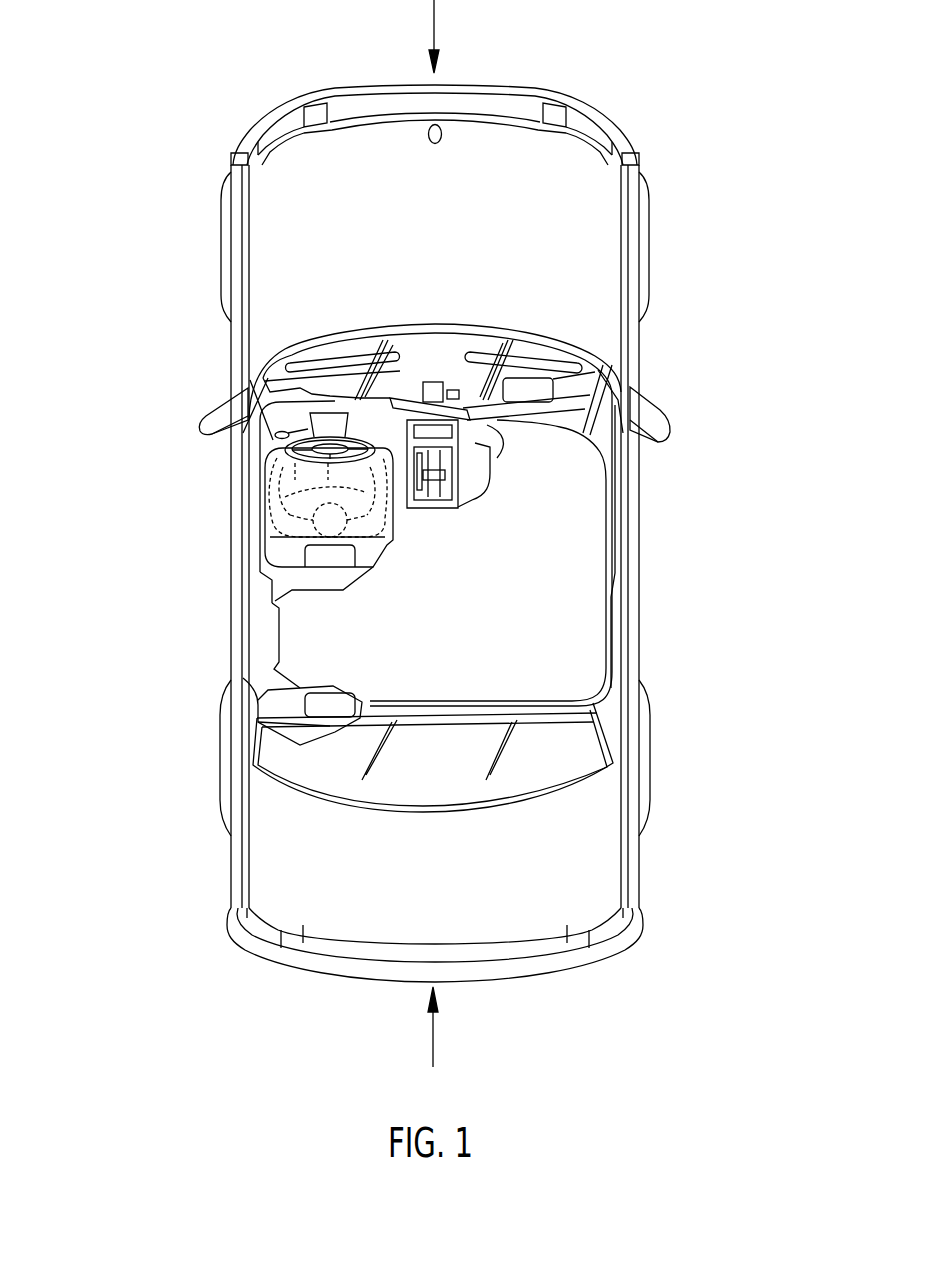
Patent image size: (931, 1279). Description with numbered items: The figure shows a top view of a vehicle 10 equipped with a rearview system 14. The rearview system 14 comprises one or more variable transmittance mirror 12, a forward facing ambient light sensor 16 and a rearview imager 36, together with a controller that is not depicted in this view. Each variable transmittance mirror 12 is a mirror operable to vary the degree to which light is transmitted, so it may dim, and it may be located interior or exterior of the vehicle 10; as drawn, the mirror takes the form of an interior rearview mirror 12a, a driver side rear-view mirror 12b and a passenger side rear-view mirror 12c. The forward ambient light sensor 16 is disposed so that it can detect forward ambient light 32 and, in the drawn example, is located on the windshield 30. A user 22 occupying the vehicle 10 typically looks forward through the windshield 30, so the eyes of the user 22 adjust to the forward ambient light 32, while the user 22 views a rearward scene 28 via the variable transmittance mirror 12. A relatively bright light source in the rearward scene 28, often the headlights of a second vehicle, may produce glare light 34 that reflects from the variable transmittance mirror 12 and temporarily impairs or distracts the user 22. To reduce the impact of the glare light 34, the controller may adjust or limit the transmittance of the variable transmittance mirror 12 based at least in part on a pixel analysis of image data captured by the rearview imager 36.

The vehicle 10 is at (667, 76).
The variable transmittance mirror 12 is at (435, 434).
The interior rearview mirror 12a is at (453, 397).
The driver side rear-view mirror 12b is at (210, 437).
The passenger side rear-view mirror 12c is at (653, 442).
The rearview system 14 is at (219, 323).
The forward ambient light sensor 16 is at (452, 412).
The user 22 is at (263, 527).
The rearward scene 28 is at (299, 1063).
The windshield 30 is at (591, 378).
The forward ambient light 32 is at (433, 33).
The glare light 34 is at (431, 1037).
The rearview imager 36 is at (435, 703).